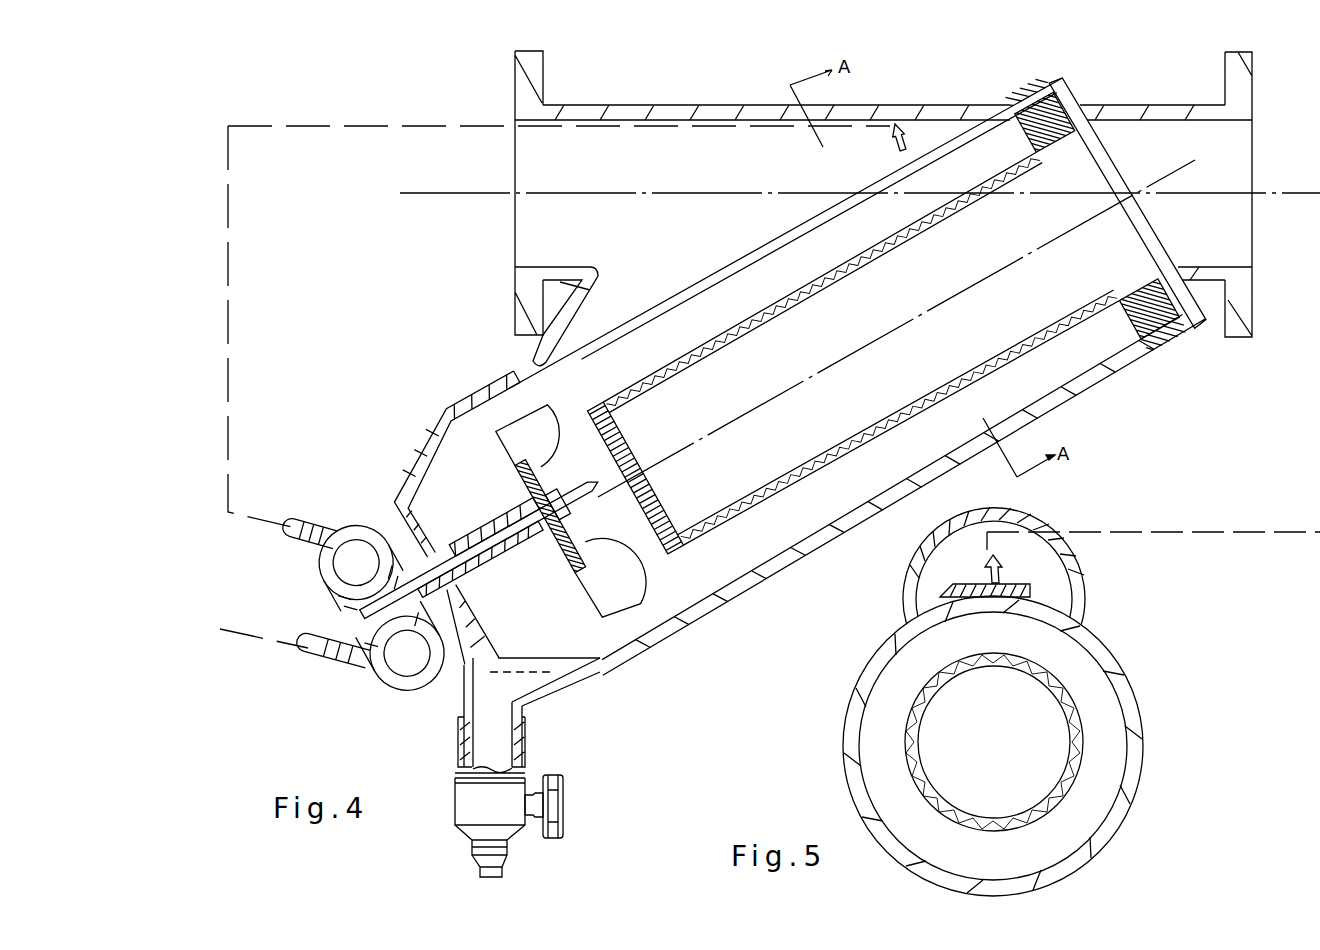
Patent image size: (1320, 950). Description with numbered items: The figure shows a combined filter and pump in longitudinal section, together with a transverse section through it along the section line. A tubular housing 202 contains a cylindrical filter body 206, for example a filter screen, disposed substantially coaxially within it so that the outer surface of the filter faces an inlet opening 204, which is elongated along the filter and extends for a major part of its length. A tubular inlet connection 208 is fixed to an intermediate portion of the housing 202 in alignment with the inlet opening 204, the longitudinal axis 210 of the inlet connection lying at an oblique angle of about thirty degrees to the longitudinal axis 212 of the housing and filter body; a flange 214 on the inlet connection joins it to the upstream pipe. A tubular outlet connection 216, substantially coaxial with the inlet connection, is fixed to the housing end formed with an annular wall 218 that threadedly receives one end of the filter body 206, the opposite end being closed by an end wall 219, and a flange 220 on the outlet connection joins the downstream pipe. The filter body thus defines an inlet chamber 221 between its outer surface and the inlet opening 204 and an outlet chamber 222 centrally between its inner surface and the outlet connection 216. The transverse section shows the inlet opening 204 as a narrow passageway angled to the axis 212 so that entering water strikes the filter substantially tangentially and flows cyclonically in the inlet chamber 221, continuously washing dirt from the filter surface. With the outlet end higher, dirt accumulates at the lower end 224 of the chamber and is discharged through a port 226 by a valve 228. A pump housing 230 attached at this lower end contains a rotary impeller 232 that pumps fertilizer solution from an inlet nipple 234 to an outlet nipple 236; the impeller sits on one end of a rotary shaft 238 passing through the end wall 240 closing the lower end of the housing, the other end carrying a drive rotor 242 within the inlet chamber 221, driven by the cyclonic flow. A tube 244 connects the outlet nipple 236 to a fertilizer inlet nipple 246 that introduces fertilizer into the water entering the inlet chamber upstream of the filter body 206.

In FIG. 4, the tubular housing 202 is at (775, 565).
In FIG. 5, the tubular housing 202 is at (1113, 830).
In FIG. 4, the inlet opening 204 is at (753, 252).
In FIG. 5, the inlet opening 204 is at (1000, 597).
In FIG. 4, the cylindrical filter body 206 is at (789, 474).
In FIG. 5, the cylindrical filter body 206 is at (1085, 747).
In FIG. 4, the tubular inlet connection 208 is at (647, 106).
In FIG. 5, the tubular inlet connection 208 is at (910, 556).
In FIG. 4, the longitudinal axis of the inlet connection 210 is at (1176, 196).
In FIG. 4, the longitudinal axis of housing 212 is at (1068, 230).
In FIG. 5, the longitudinal axis of housing 212 is at (993, 742).
In FIG. 4, the flange 214 is at (537, 95).
In FIG. 4, the tubular outlet connection 216 is at (1138, 105).
In FIG. 4, the annular wall 218 is at (1017, 123).
In FIG. 4, the end wall 219 is at (622, 427).
In FIG. 4, the flange 220 is at (1253, 92).
In FIG. 4, the inlet chamber 221 is at (730, 320).
In FIG. 5, the inlet chamber 221 is at (907, 670).
In FIG. 4, the outlet chamber 222 is at (908, 302).
In FIG. 5, the outlet chamber 222 is at (1010, 731).
In FIG. 4, the lower end of chamber 224 is at (510, 692).
In FIG. 4, the port 226 is at (497, 880).
In FIG. 4, the valve 228 is at (562, 802).
In FIG. 4, the pump housing 230 is at (390, 687).
In FIG. 4, the rotary impeller 232 is at (372, 519).
In FIG. 4, the inlet nipple 234 is at (318, 660).
In FIG. 4, the outlet nipple 236 is at (302, 525).
In FIG. 4, the rotary shaft 238 is at (447, 578).
In FIG. 4, the end wall 240 is at (412, 517).
In FIG. 4, the drive rotor 242 is at (610, 592).
In FIG. 4, the tube 244 is at (232, 276).
In FIG. 5, the tube 244 is at (1113, 532).
In FIG. 4, the fertilizer inlet nipple 246 is at (893, 145).
In FIG. 5, the fertilizer inlet nipple 246 is at (988, 578).